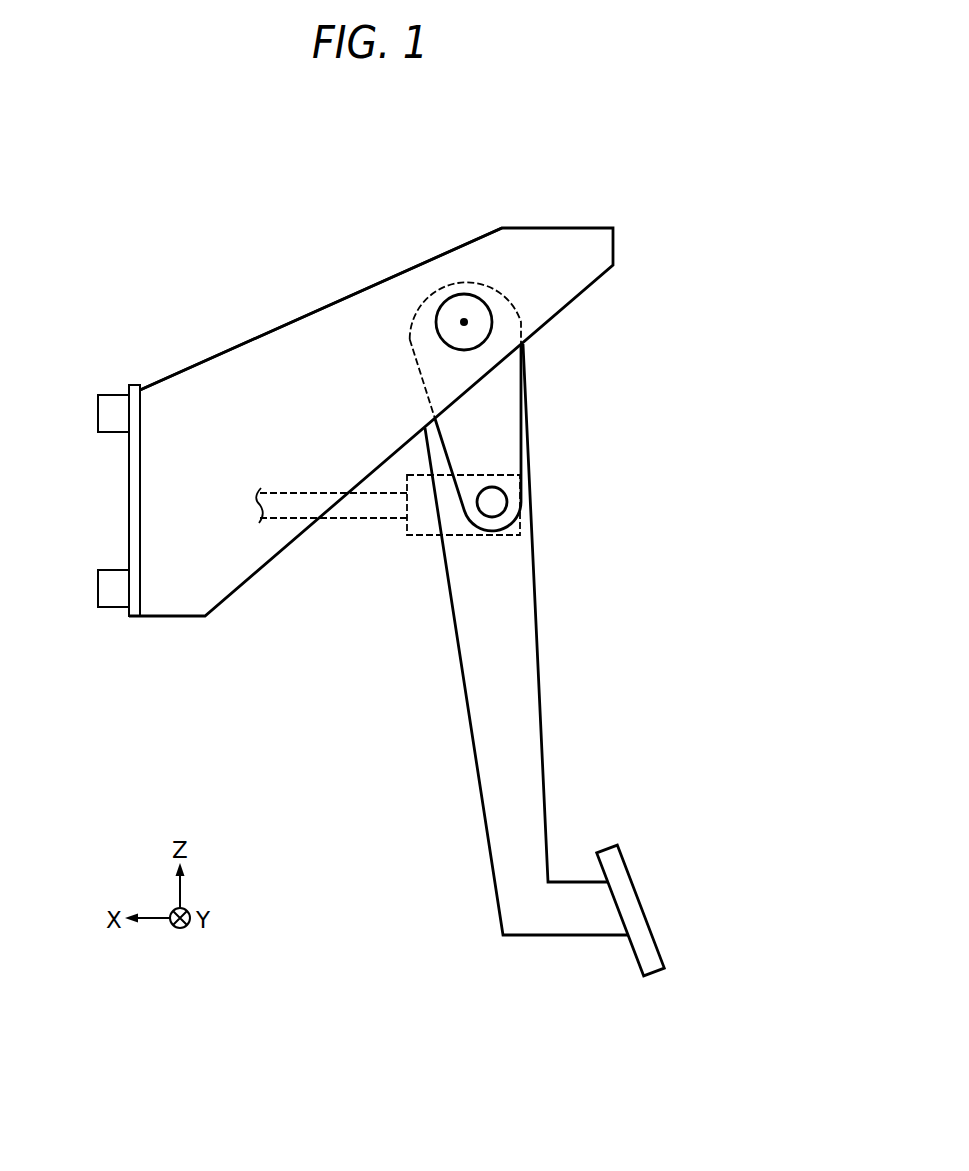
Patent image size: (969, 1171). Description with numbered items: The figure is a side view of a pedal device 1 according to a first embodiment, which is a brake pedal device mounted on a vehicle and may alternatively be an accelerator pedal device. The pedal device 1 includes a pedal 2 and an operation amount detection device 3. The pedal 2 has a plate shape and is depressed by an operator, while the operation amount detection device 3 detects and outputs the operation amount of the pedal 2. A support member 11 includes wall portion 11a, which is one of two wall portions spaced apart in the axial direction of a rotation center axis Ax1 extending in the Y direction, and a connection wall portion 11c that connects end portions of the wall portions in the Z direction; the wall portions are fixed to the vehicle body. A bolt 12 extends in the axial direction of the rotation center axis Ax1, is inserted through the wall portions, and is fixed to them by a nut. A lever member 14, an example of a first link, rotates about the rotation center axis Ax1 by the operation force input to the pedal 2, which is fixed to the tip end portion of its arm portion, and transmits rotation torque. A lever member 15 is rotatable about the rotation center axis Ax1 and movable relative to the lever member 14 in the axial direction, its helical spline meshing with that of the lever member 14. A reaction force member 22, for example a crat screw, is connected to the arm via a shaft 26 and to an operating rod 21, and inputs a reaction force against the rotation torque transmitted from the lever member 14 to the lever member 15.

The pedal device 1 is at (608, 133).
The pedal 2 is at (642, 903).
The operation amount detection device 3 is at (602, 337).
The support member 11 is at (280, 352).
The wall portion 11a is at (321, 309).
The connection wall portion 11c is at (130, 497).
The bolt 12 is at (452, 295).
The lever member 14 is at (503, 717).
The lever member 15 is at (505, 417).
The operating rod 21 is at (333, 520).
The reaction force member 22 is at (418, 537).
The shaft 26 is at (490, 502).
The rotation center axis Ax1 is at (466, 320).